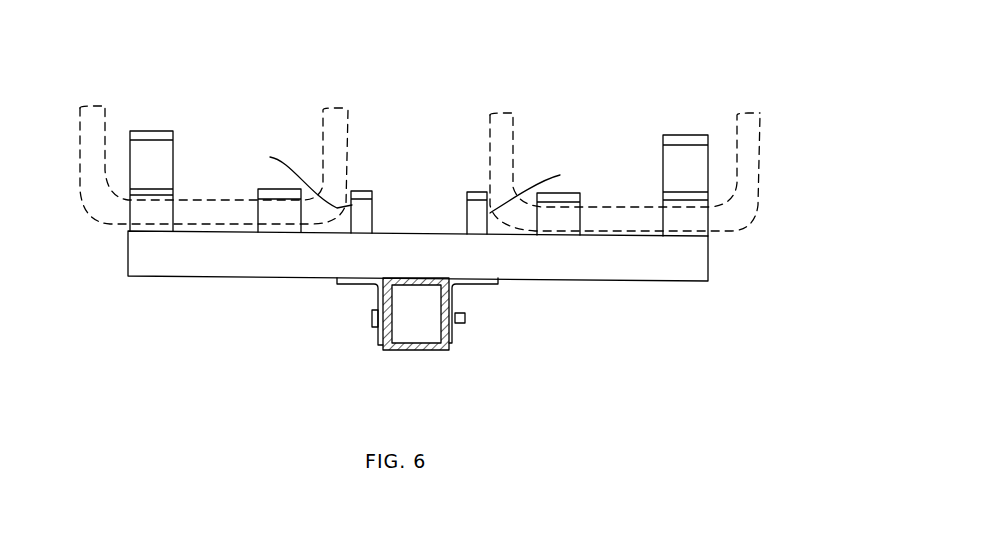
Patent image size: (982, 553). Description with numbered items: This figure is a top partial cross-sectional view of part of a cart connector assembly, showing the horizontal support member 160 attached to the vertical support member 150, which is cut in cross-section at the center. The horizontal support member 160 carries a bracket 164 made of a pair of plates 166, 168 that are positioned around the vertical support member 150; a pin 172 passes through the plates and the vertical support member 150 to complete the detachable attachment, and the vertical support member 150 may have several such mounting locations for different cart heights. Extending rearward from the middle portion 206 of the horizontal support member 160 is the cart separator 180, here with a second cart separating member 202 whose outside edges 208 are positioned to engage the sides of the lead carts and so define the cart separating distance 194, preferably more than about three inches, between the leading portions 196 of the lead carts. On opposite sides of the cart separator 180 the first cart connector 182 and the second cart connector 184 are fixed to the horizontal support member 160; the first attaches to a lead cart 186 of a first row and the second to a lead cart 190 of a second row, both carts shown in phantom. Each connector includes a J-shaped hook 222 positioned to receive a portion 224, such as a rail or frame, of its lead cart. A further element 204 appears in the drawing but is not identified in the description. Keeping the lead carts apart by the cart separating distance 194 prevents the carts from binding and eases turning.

The vertical support member 150 is at (420, 350).
The horizontal support member 160 is at (708, 281).
The bracket 164 is at (368, 340).
The plate 166 is at (455, 298).
The plate 168 is at (376, 298).
The pin 172 is at (372, 318).
The cart separator 180 is at (457, 122).
The first cart connector 182 is at (705, 117).
The second cart connector 184 is at (143, 110).
The lead cart 186 is at (768, 152).
The lead cart 190 is at (85, 225).
The cart separating distance 194 is at (487, 178).
The leading portion 196 is at (315, 185).
The second cart separating member 202 is at (357, 218).
The post 204 is at (477, 223).
The middle portion 206 is at (410, 253).
The outside edges 208 is at (417, 174).
The J-shaped hook 222 is at (142, 213).
The portion of the lead cart 224 is at (80, 160).